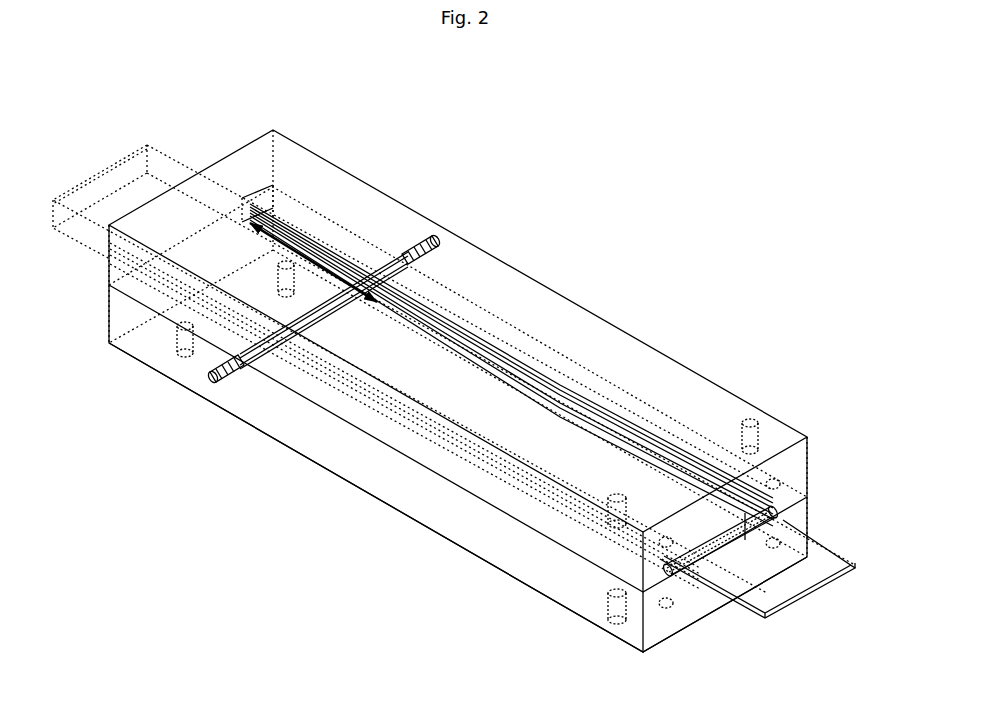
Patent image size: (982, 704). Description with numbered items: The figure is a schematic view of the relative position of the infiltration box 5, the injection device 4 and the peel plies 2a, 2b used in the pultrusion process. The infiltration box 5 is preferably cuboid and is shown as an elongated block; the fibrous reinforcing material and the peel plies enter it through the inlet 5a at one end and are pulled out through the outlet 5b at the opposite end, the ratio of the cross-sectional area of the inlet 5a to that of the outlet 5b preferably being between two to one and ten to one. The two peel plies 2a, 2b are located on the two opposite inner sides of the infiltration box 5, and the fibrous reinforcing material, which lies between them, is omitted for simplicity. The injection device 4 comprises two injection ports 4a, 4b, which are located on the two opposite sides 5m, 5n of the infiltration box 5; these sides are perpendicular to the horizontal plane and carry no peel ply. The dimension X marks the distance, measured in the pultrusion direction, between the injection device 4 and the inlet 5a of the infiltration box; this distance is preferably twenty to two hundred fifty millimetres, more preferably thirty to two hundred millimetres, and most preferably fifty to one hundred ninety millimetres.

The peel ply 2a is at (138, 154).
The peel ply 2b is at (80, 248).
The injection device 4 is at (428, 276).
The injection port 4a is at (210, 382).
The injection port 4b is at (443, 247).
The infiltration box 5 is at (557, 287).
The inlet of the infiltration box 5a is at (218, 222).
The outlet of the infiltration box 5b is at (775, 512).
The side of the infiltration box 5m is at (290, 422).
The side of the infiltration box 5n is at (667, 388).
The distance between the injection device and the inlet X is at (313, 255).